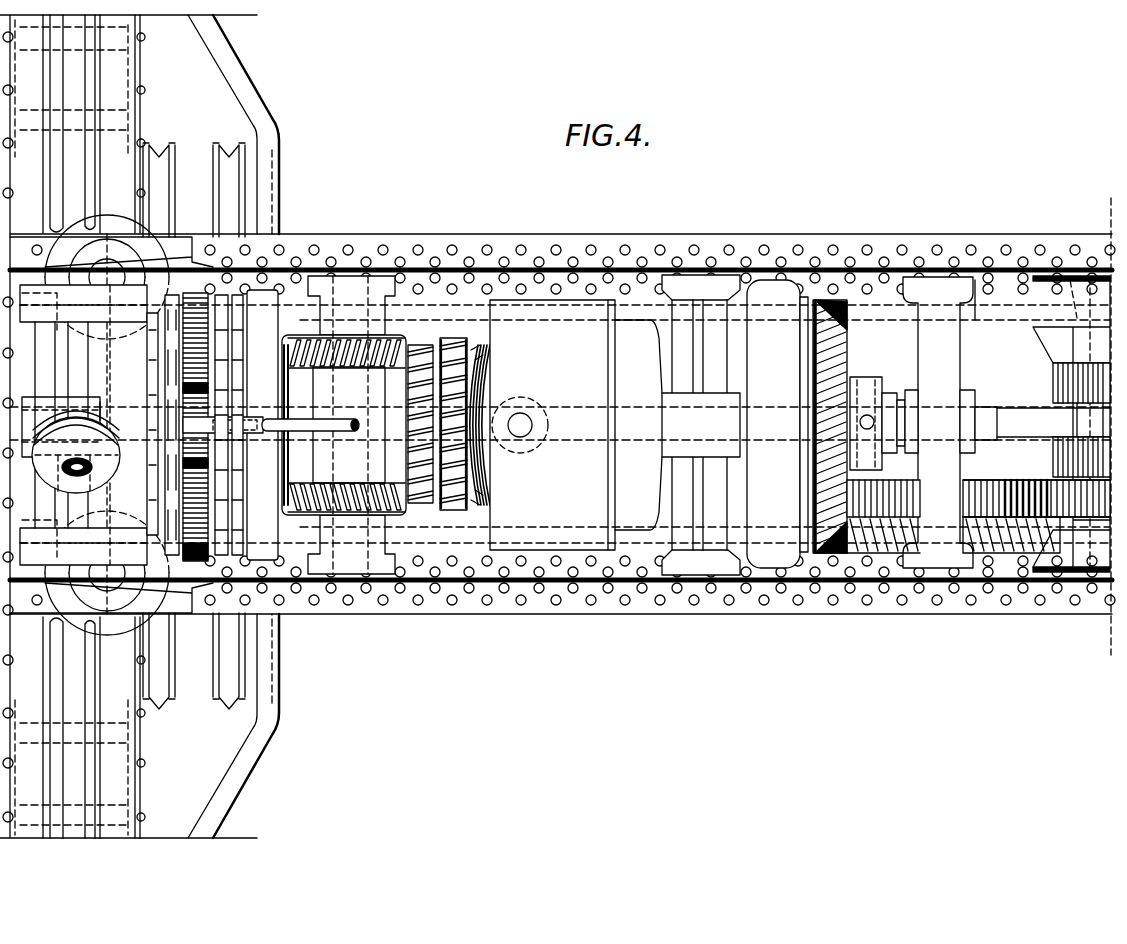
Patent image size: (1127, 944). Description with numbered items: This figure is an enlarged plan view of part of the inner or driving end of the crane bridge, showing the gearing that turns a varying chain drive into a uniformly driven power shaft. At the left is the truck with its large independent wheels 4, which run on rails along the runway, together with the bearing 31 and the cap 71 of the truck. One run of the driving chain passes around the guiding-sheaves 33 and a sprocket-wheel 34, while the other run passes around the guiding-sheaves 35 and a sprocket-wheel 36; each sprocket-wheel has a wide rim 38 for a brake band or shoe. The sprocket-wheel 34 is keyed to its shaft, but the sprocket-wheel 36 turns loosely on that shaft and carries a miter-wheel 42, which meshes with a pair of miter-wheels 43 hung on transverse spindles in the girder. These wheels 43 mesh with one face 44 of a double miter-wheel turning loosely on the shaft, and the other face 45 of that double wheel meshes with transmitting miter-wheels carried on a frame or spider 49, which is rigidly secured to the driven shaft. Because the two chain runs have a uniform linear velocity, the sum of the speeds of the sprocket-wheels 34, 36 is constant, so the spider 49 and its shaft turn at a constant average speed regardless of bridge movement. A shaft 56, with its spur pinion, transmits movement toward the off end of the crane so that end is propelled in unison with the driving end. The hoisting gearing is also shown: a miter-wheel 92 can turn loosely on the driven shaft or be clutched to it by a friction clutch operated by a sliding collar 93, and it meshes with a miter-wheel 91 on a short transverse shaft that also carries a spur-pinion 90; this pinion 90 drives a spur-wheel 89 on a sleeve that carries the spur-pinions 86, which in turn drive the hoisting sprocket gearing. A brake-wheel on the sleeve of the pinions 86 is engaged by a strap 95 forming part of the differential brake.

The wheels 4 is at (139, 426).
The bearing 31 is at (111, 425).
The guiding-sheaves 33 is at (159, 426).
The guiding-sheaves 35 is at (229, 426).
The sprocket-wheel 34 is at (150, 403).
The sprocket-wheel 36 is at (238, 403).
The wide rim 38 is at (196, 425).
The miter-wheel 42 is at (344, 425).
The miter-wheels 43 is at (344, 425).
The face of double miter-wheel 44 is at (408, 424).
The face of double miter-wheel 45 is at (465, 425).
The frame or spider 49 is at (649, 425).
The shaft 56 is at (310, 426).
The cap 71 is at (83, 425).
The spur-pinion 86 is at (1071, 420).
The spur-wheel 89 is at (1055, 481).
The spur-pinion 90 is at (978, 506).
The miter-wheel 91 is at (1052, 533).
The miter-wheel 92 is at (838, 343).
The sliding collar 93 is at (877, 413).
The strap 95 is at (1042, 422).